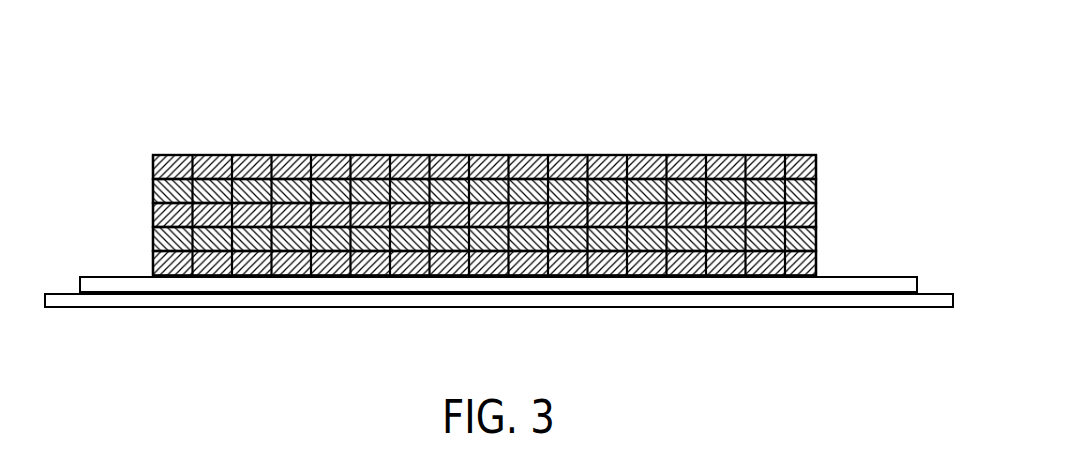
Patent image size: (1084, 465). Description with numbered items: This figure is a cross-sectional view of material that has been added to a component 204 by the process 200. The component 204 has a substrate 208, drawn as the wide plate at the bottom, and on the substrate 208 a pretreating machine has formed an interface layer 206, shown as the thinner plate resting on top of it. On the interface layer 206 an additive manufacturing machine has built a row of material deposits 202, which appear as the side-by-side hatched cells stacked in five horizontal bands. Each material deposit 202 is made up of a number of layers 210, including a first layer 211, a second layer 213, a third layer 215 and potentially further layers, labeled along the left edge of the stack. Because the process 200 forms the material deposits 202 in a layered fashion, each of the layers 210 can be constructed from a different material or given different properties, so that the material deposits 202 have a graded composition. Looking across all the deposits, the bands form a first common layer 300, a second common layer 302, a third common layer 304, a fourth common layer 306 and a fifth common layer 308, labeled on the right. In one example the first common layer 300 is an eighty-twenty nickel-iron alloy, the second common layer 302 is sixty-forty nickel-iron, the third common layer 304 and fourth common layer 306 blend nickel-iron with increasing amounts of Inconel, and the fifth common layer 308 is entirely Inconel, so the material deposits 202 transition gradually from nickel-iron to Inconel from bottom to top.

The process 200 is at (502, 193).
The material deposits 202 is at (487, 170).
The component 204 is at (502, 301).
The interface layer 206 is at (875, 277).
The substrate 208 is at (937, 294).
The layers 210 is at (153, 187).
The first layer 211 is at (153, 262).
The second layer 213 is at (153, 237).
The third layer 215 is at (153, 213).
The first common layer 300 is at (819, 257).
The second common layer 302 is at (819, 234).
The third common layer 304 is at (819, 211).
The fourth common layer 306 is at (819, 187).
The fifth common layer 308 is at (819, 156).